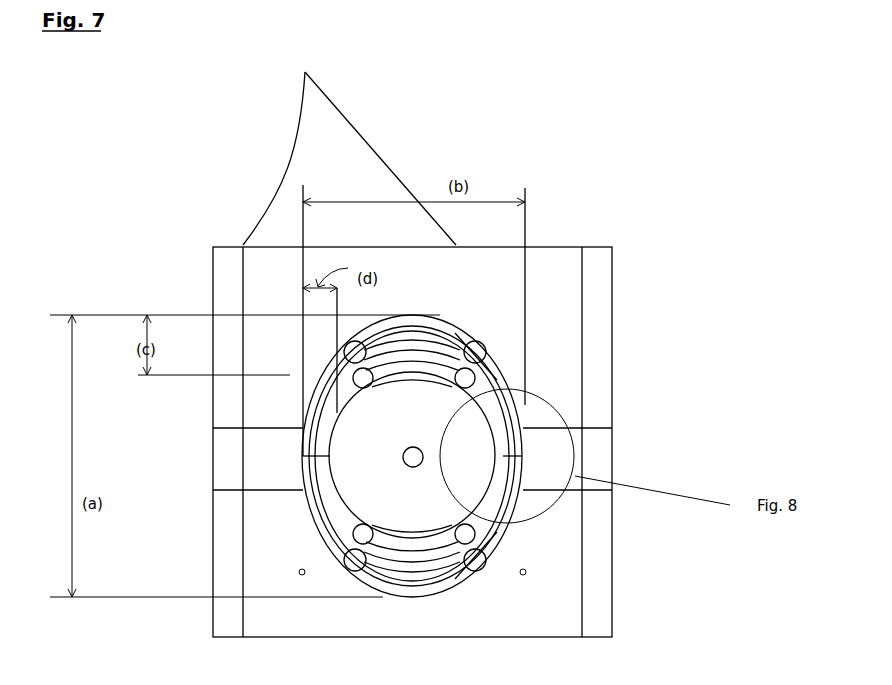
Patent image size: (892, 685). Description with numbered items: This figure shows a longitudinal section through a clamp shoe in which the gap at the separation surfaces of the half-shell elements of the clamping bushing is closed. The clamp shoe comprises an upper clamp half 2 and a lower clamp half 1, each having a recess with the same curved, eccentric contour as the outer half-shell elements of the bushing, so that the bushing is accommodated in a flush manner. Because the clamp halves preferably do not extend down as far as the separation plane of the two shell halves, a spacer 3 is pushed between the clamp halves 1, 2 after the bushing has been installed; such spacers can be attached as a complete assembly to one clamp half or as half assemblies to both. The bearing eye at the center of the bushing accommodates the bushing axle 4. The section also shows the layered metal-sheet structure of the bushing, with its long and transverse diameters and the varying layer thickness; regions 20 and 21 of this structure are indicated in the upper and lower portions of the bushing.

The lower clamp half 1 is at (612, 518).
The upper clamp half 2 is at (600, 328).
The spacer 3 is at (593, 459).
The bushing axle 4 is at (467, 435).
The upper coil slot 20 is at (497, 377).
The lower coil slot 21 is at (495, 542).